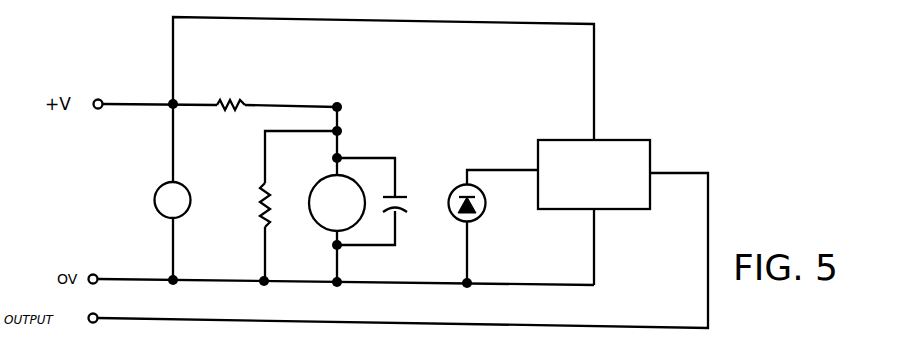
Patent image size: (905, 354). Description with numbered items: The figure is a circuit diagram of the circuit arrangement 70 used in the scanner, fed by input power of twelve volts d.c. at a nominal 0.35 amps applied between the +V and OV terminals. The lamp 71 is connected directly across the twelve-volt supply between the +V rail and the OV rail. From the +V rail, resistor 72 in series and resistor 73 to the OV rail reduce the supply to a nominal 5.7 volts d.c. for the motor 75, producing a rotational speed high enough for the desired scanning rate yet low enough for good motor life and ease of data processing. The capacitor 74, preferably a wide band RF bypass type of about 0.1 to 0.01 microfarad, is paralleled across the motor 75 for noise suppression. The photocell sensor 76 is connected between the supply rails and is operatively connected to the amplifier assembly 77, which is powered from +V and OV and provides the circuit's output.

The circuit arrangement 70 is at (631, 163).
The lamp 71 is at (162, 200).
The resistor 72 is at (229, 100).
The resistor 73 is at (260, 200).
The capacitor 74 is at (403, 200).
The motor 75 is at (328, 217).
The photocell sensor 76 is at (484, 210).
The amplifier assembly 77 is at (632, 190).